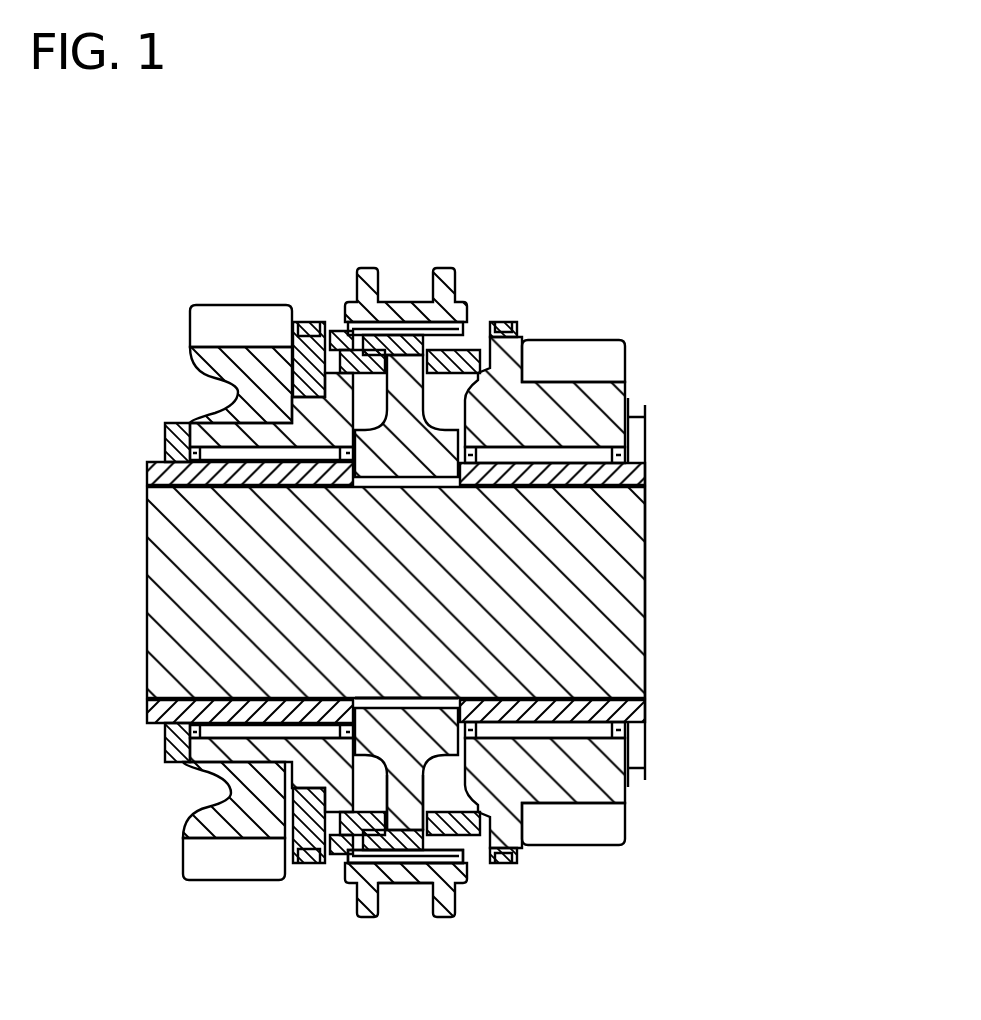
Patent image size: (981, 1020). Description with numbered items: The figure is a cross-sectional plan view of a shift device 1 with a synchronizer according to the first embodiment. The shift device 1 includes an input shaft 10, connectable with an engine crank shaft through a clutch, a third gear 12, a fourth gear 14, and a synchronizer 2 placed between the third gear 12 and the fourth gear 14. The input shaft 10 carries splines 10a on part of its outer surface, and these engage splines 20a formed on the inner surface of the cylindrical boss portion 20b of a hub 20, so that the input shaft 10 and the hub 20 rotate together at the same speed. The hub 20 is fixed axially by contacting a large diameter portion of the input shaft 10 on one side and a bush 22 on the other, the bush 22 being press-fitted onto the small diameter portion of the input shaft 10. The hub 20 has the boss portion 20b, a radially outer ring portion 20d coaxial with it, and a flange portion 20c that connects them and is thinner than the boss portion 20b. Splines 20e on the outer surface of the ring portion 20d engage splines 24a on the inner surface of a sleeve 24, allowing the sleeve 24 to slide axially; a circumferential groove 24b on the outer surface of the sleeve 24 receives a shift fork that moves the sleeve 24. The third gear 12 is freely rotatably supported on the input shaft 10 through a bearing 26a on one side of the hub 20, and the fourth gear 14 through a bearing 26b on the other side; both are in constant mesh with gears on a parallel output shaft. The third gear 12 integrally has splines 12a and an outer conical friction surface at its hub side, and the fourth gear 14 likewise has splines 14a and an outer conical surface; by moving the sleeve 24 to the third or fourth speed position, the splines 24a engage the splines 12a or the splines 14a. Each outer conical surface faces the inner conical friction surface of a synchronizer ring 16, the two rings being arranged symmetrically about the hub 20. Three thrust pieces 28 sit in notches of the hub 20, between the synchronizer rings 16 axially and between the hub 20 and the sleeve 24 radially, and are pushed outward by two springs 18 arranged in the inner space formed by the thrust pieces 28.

The shift device 1 is at (426, 154).
The synchronizer 2 is at (528, 233).
The input shaft 10 is at (612, 528).
The splines 10a is at (415, 697).
The third gear 12 is at (598, 370).
The splines 12a is at (520, 326).
The fourth gear 14 is at (236, 320).
The splines 14a is at (305, 318).
The synchronizer ring 16 is at (484, 318).
The spring 18 is at (476, 318).
The hub 20 is at (240, 770).
The splines 20a is at (415, 697).
The boss portion 20b is at (445, 730).
The flange portion 20c is at (415, 790).
The ring portion 20d is at (470, 868).
The splines 20e is at (350, 882).
The bush 22 is at (163, 460).
The sleeve 24 is at (452, 915).
The splines 24a is at (350, 882).
The circumferential groove 24b is at (400, 890).
The bearing 26a is at (560, 455).
The bearing 26b is at (246, 452).
The thrust piece 28 is at (398, 318).